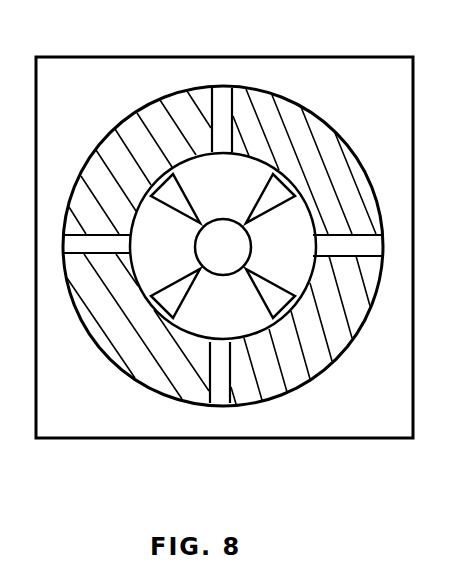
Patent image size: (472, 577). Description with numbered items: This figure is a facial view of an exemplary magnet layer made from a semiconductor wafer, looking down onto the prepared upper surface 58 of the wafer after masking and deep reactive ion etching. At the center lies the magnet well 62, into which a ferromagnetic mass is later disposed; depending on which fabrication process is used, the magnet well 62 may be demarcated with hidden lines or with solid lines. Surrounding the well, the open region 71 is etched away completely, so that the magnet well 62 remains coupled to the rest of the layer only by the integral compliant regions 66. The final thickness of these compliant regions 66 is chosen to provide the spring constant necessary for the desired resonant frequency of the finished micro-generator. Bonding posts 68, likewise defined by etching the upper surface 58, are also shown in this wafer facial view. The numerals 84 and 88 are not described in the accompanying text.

The upper surface 58 is at (80, 80).
The magnet well 62 is at (238, 248).
The integral compliant regions 66 is at (218, 128).
The bonding posts 68 is at (265, 292).
The open region 71 is at (125, 138).
The segment (deleted numeral) 84 is at (394, 105).
The upper vanes 88 is at (265, 203).